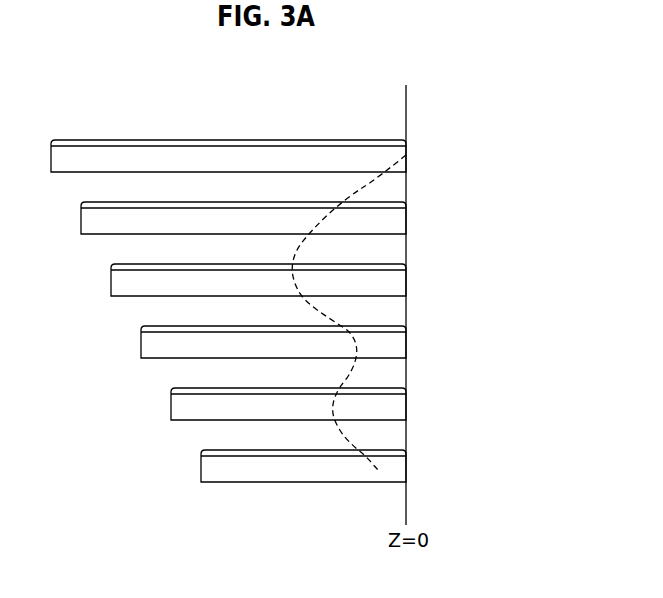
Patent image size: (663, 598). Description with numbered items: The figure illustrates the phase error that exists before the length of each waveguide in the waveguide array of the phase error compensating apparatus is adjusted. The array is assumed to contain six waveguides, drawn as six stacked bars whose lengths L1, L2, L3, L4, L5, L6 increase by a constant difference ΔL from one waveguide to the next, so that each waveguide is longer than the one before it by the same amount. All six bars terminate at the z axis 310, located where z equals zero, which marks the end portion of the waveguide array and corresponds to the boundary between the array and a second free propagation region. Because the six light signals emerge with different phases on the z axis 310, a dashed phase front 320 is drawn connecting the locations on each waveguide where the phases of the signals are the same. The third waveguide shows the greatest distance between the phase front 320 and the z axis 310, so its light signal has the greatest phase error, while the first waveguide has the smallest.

The z axis 310 is at (406, 103).
The phase front 320 is at (362, 188).
The length of first waveguide L1 is at (237, 139).
The length of second waveguide L2 is at (252, 201).
The length of third waveguide L3 is at (267, 263).
The length of fourth waveguide L4 is at (282, 325).
The length of fifth waveguide L5 is at (297, 387).
The length of sixth waveguide L6 is at (312, 449).